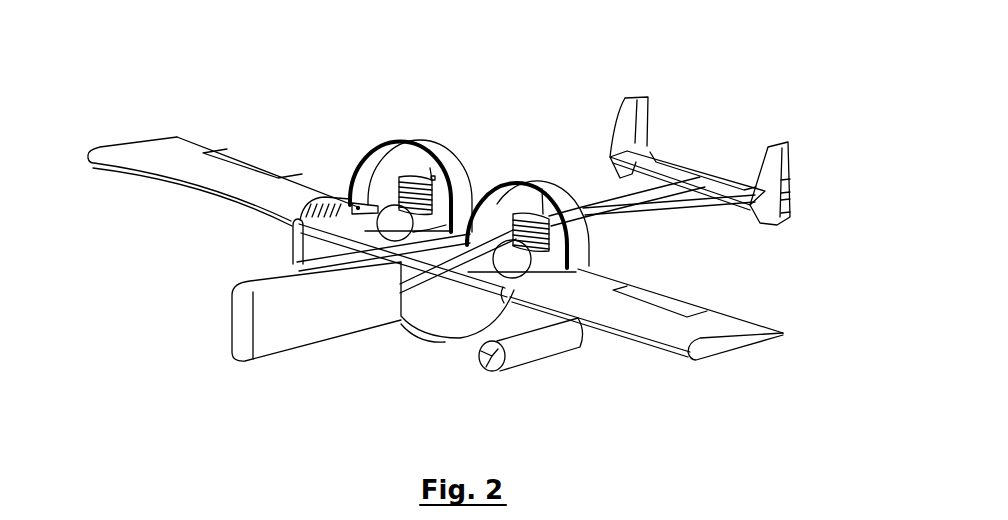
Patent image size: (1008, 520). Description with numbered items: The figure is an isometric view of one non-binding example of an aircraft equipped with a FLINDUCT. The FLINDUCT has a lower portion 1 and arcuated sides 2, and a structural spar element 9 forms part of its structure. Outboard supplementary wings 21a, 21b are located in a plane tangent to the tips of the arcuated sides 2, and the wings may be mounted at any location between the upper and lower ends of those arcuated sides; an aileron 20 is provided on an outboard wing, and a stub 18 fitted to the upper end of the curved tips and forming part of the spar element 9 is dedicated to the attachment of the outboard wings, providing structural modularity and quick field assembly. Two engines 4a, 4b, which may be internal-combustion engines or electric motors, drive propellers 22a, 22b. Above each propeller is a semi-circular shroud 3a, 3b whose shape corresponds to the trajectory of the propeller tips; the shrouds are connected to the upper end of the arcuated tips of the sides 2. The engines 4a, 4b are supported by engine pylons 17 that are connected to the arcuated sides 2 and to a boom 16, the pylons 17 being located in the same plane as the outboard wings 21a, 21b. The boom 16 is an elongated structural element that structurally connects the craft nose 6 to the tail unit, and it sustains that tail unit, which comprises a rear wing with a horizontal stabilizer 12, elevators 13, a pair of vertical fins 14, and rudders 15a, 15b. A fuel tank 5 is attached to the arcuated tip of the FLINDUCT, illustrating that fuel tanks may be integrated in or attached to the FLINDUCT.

The lower portion of the FLINDUCT 1 is at (455, 318).
The arcuate sides of the FLINDUCT 2 is at (312, 250).
The shroud 3a is at (428, 148).
The shroud 3b is at (542, 187).
The I.C. engine/electric motor 4a is at (410, 195).
The I.C. engine/electric motor 4b is at (535, 242).
The fuel tank 5 is at (543, 337).
The aircraft nose 6 is at (295, 327).
The structural element, spar 9 is at (440, 268).
The horizontal stabilizer 12 is at (703, 175).
The elevator 13 is at (660, 158).
The fin 14 is at (630, 118).
The rudder 15a is at (785, 185).
The rudder 15b is at (787, 207).
The boom 16 is at (592, 216).
The engine pylon 17 is at (358, 207).
The stub 18 is at (712, 349).
The aileron 20 is at (240, 157).
The supplementary wing 21a is at (177, 165).
The supplementary wing 21b is at (615, 320).
The propeller 22a is at (431, 178).
The propeller 22b is at (543, 210).